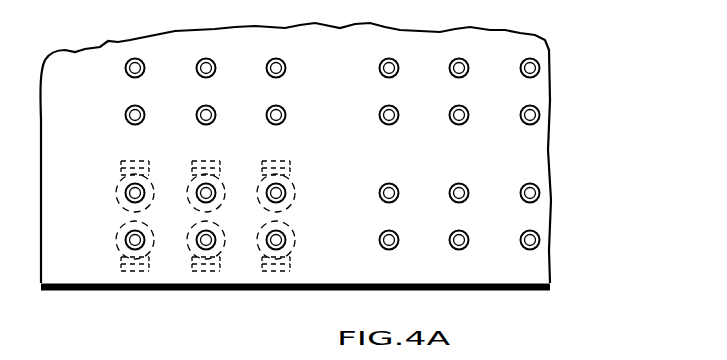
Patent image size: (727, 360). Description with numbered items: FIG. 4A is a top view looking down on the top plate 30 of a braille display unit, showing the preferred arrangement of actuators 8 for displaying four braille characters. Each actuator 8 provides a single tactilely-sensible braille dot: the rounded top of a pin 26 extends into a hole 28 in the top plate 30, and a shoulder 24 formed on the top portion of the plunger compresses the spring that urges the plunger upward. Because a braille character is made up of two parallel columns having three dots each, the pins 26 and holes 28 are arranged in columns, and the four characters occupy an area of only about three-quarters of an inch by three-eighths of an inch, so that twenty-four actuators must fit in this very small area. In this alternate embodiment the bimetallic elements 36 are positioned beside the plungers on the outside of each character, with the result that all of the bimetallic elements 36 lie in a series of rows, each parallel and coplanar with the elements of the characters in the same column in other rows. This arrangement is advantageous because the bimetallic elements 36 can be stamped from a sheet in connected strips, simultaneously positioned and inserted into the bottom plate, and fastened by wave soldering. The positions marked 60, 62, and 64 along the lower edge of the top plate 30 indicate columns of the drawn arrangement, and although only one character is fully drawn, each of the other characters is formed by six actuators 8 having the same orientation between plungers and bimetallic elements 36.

The actuator 8 is at (197, 124).
The shoulder 24 is at (117, 203).
The pin 26 is at (128, 107).
The hole 28 is at (201, 193).
The top plate 30 is at (550, 118).
The bimetallic element 36 is at (264, 163).
The column position 60 is at (135, 294).
The column position 62 is at (276, 294).
The column position 64 is at (206, 294).